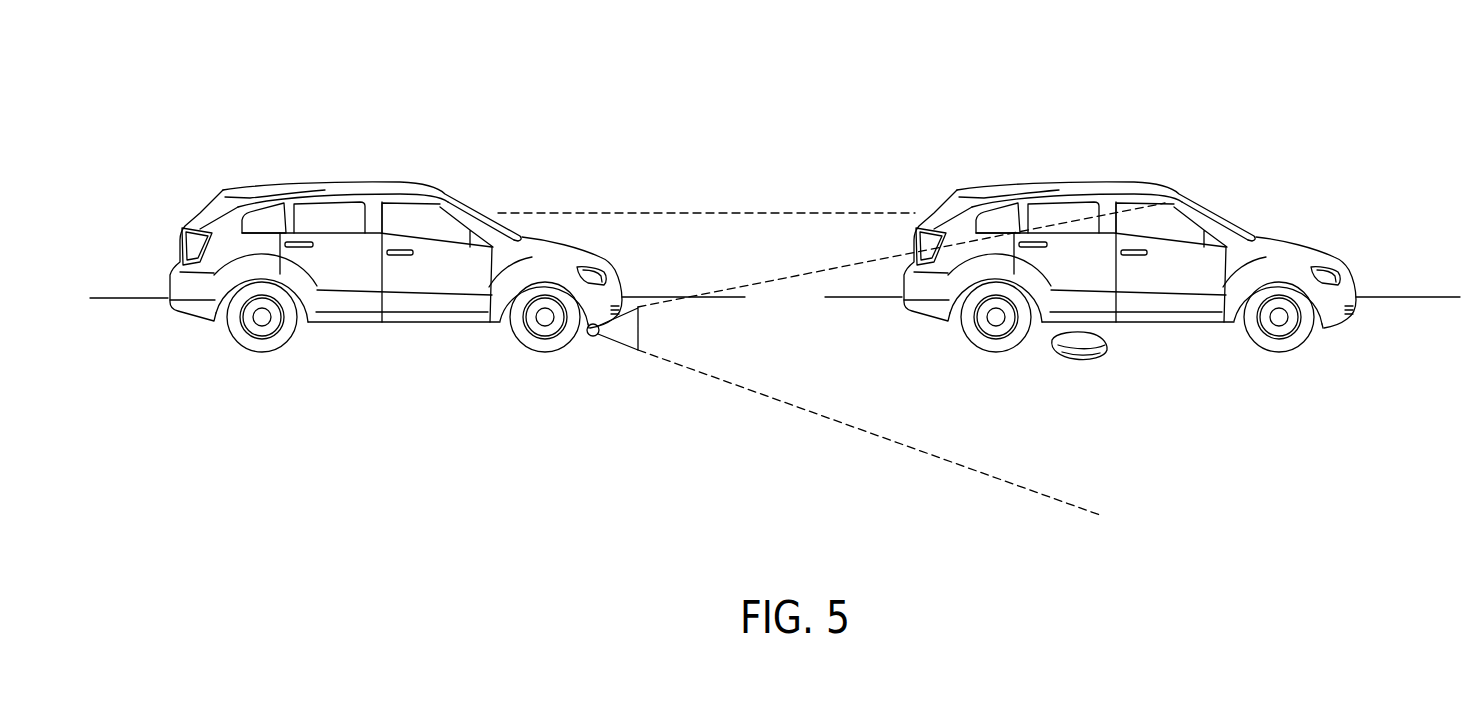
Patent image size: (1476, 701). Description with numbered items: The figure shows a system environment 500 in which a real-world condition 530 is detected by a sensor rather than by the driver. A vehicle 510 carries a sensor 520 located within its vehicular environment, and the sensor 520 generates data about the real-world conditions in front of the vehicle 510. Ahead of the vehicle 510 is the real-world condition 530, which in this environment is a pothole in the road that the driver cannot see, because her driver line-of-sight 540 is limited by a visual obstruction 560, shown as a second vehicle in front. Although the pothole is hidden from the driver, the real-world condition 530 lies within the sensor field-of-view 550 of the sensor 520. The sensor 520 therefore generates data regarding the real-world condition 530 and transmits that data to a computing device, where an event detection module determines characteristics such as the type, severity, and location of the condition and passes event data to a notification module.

The system environment 500 is at (484, 40).
The vehicle 510 is at (326, 183).
The sensor 520 is at (591, 337).
The real-world condition 530 is at (1102, 362).
The driver line-of-sight 540 is at (703, 212).
The sensor field-of-view 550 is at (851, 426).
The visual obstruction 560 is at (1058, 183).